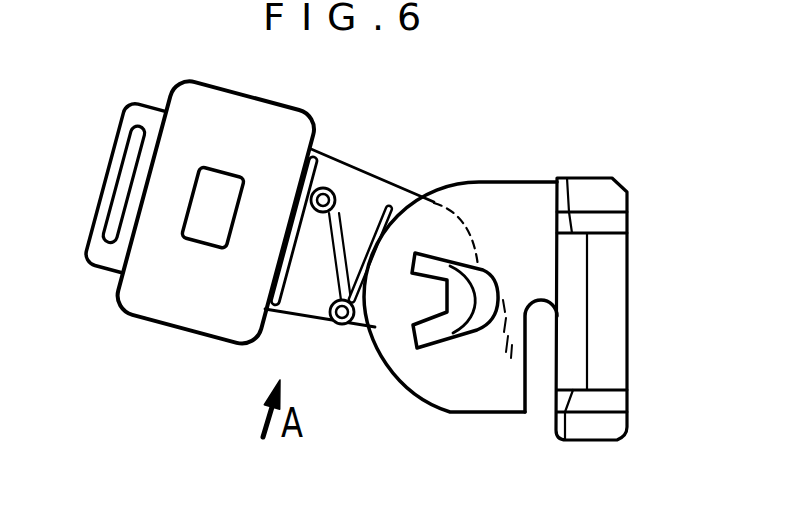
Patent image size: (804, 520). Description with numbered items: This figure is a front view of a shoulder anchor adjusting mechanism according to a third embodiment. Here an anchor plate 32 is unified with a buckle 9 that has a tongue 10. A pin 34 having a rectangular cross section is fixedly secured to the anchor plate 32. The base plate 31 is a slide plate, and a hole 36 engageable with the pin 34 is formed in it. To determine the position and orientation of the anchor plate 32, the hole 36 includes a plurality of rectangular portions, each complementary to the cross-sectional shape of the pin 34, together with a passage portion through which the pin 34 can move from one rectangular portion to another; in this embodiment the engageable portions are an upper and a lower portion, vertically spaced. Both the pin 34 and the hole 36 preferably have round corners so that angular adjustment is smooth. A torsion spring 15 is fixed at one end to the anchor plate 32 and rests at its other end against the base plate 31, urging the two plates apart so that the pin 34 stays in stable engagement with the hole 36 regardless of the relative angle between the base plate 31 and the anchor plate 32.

The buckle 9 is at (291, 124).
The tongue 10 is at (107, 259).
The torsion spring 15 is at (333, 192).
The base plate 31 is at (527, 200).
The anchor plate 32 is at (298, 306).
The pin 34 is at (423, 272).
The hole 36 is at (462, 323).